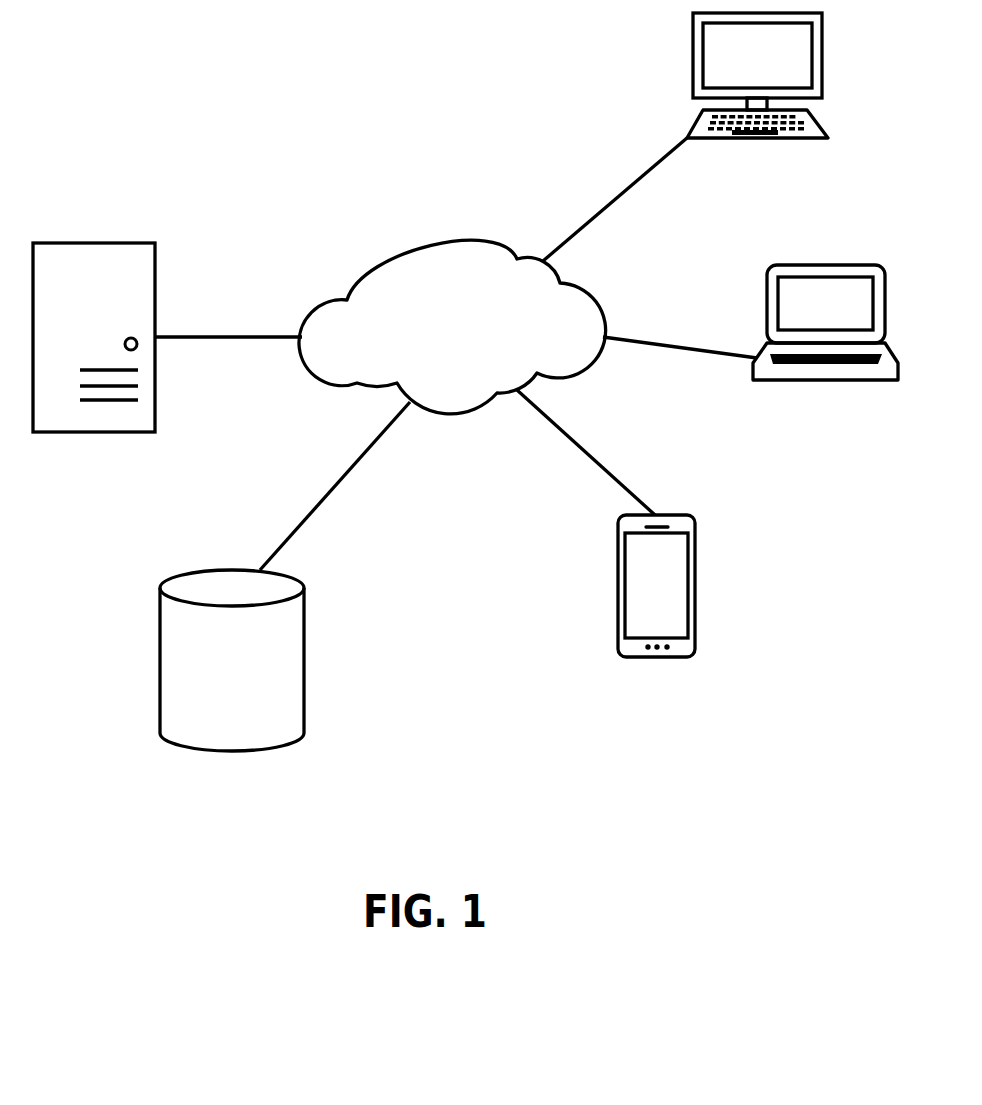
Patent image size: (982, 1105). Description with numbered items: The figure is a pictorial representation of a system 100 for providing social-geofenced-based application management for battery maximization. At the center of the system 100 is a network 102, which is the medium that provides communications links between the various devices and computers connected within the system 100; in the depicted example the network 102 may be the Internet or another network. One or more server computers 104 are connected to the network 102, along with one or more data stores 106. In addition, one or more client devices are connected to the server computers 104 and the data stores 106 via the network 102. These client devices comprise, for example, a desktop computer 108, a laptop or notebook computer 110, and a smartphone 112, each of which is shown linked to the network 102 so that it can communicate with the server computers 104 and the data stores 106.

The system 100 is at (352, 133).
The network 102 is at (456, 354).
The server computer 104 is at (95, 355).
The data store 106 is at (235, 681).
The desktop computer 108 is at (757, 96).
The laptop or notebook computer 110 is at (825, 346).
The smartphone 112 is at (657, 602).